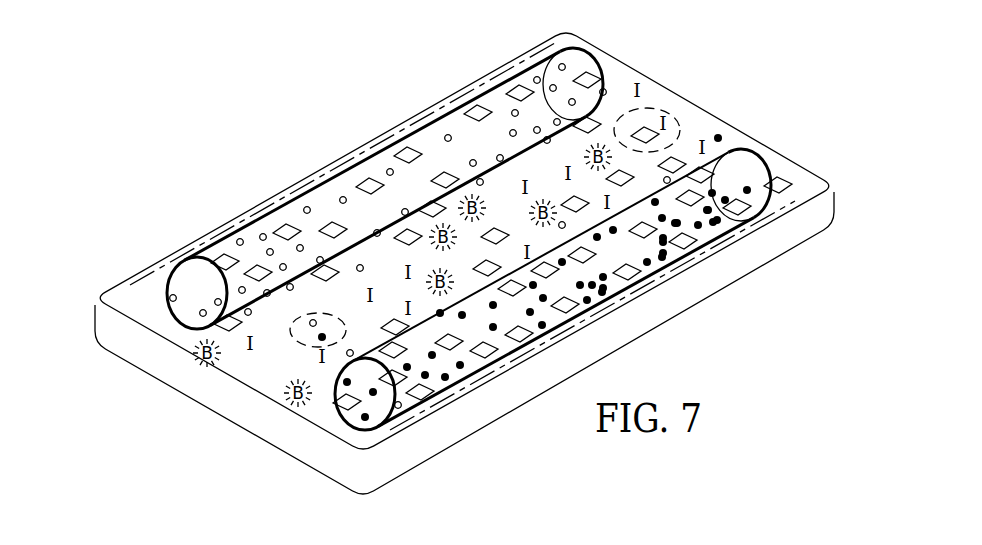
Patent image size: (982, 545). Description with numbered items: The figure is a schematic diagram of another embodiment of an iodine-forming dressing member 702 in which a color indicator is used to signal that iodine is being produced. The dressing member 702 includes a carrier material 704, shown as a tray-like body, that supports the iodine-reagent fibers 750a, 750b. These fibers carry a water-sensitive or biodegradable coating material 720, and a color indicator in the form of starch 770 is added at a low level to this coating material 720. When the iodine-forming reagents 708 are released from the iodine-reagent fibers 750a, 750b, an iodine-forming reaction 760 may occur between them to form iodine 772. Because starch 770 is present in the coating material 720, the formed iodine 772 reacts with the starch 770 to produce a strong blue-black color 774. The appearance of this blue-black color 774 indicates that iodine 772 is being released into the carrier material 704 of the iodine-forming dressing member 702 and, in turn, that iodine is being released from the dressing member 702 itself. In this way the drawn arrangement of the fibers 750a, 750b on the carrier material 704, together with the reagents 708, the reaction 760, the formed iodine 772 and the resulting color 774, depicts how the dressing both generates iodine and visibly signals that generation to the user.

The iodine-forming dressing member 702 is at (176, 76).
The carrier material 704 is at (737, 272).
The iodine-forming reagents 708 is at (722, 130).
The water-sensitive or biodegradable coating material 720 is at (495, 103).
The iodine-reagent fibers 750a is at (380, 180).
The iodine-reagent fibers 750b is at (753, 164).
The iodine-forming reaction 760 is at (290, 337).
The starch 770 is at (213, 257).
The formed iodine 772 is at (647, 88).
The blue-black color 774 is at (203, 353).